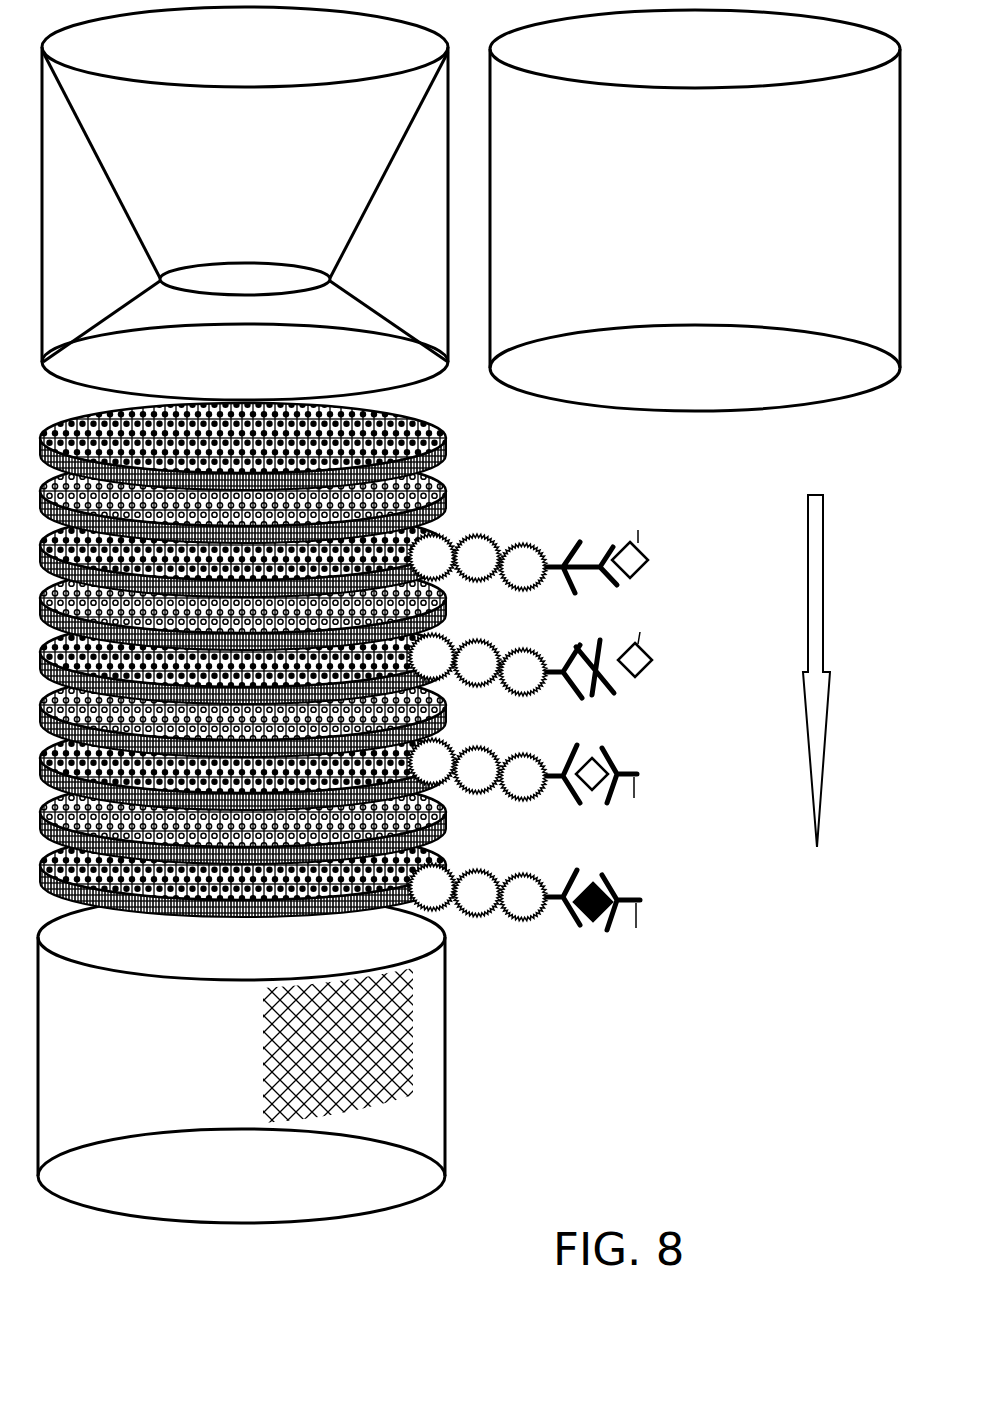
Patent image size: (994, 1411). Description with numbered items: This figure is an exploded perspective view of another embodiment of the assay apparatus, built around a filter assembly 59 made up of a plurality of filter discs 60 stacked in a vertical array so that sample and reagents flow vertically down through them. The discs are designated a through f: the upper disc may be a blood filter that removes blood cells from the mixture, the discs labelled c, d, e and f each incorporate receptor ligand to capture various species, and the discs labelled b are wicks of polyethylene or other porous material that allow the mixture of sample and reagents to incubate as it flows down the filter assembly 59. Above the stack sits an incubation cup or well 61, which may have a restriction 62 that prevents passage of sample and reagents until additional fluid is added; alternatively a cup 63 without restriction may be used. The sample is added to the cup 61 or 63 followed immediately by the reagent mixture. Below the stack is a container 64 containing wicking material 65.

The filter assembly 59 is at (652, 725).
The filter discs 60 is at (450, 508).
The incubation cup or well 61 is at (308, 170).
The restriction 62 is at (182, 281).
The cup 63 is at (720, 224).
The container 64 is at (447, 1025).
The wicking material 65 is at (348, 1063).